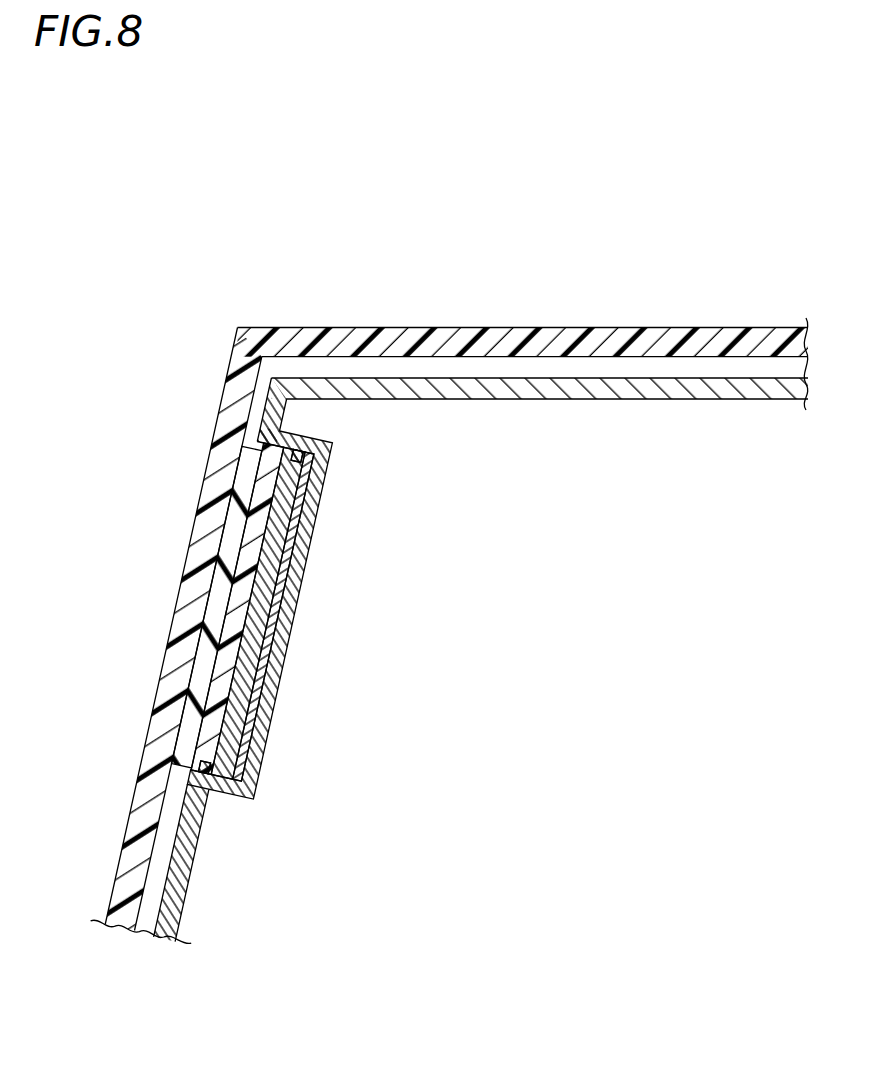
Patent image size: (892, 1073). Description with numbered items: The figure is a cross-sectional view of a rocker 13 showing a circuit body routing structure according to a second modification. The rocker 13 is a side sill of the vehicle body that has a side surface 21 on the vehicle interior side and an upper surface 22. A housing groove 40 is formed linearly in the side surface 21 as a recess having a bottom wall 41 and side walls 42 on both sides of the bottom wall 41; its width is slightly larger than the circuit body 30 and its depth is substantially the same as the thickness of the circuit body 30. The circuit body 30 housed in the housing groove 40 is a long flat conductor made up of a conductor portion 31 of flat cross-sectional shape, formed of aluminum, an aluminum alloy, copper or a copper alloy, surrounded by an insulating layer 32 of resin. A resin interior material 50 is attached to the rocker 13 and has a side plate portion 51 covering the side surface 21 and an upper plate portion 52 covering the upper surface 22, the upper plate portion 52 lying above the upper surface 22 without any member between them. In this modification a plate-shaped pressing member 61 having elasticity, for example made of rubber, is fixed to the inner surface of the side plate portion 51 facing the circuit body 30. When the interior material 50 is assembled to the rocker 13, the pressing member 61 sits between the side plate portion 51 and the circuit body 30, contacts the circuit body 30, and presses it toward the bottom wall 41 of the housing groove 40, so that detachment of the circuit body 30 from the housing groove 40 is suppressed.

The rocker 13 is at (532, 334).
The side surface 21 is at (185, 827).
The upper surface 22 is at (583, 390).
The circuit body 30 is at (251, 609).
The conductor portion 31 is at (268, 573).
The insulating layer 32 is at (287, 628).
The housing groove 40 is at (235, 601).
The bottom wall 41 is at (325, 497).
The side walls 42 is at (306, 458).
The interior material 50 is at (448, 583).
The side plate portion 51 is at (198, 578).
The upper plate portion 52 is at (487, 326).
The pressing member 61 is at (250, 493).